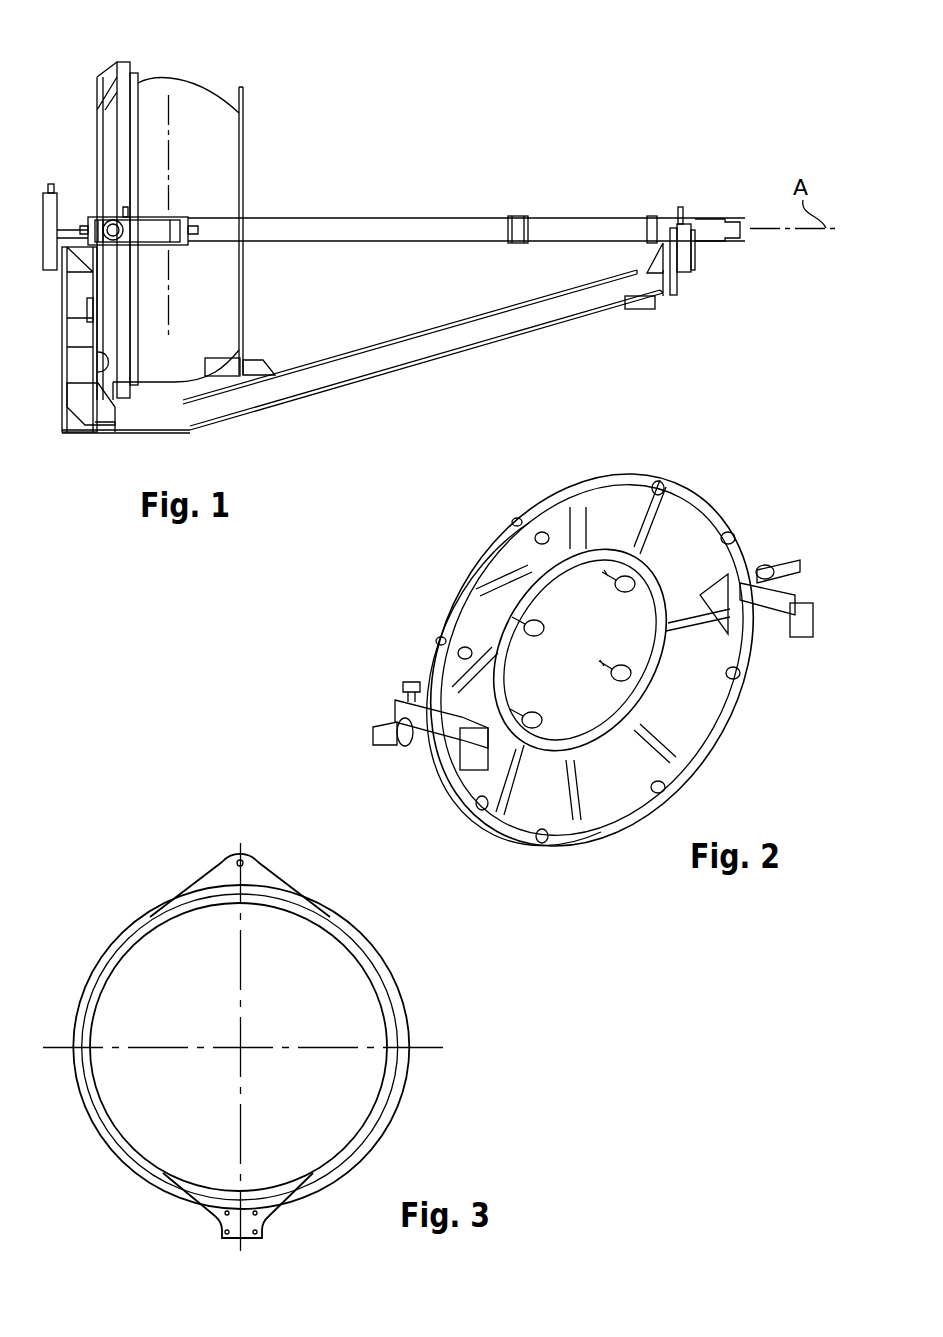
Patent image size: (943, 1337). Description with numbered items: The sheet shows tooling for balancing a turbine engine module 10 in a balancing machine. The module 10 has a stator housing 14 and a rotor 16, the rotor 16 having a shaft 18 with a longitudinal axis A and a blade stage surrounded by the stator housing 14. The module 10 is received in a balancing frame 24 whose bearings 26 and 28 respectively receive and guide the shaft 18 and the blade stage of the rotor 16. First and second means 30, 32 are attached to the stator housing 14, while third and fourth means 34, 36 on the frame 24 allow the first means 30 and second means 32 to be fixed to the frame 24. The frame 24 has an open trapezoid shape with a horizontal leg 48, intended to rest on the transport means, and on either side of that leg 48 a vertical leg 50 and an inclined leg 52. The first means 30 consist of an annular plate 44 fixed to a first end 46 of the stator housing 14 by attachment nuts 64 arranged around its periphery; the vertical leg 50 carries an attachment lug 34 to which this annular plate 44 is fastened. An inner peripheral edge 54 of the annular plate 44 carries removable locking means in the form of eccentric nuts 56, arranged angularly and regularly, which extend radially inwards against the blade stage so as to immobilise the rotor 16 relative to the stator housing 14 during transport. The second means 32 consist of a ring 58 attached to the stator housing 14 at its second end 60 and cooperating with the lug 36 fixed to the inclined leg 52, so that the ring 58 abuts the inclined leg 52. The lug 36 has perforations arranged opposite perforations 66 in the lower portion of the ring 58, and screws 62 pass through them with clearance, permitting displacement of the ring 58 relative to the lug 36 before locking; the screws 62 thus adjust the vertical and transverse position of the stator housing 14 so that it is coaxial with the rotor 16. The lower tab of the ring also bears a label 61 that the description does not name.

In FIG. 1, the turbine engine module 10 is at (382, 190).
In FIG. 1, the stator housing 14 is at (197, 80).
In FIG. 1, the rotor 16 is at (463, 213).
In FIG. 1, the shaft 18 is at (560, 218).
In FIG. 1, the balancing frame 24 is at (512, 322).
In FIG. 1, the bearing 26 is at (693, 190).
In FIG. 1, the bearing 28 is at (73, 190).
In FIG. 1, the first means 30 is at (127, 58).
In FIG. 2, the first means 30 is at (742, 495).
In FIG. 1, the second means 32 is at (245, 100).
In FIG. 3, the second means 32 is at (322, 862).
In FIG. 1, the attachment lug 34 is at (90, 302).
In FIG. 1, the lug 36 is at (260, 365).
In FIG. 1, the annular plate 44 is at (122, 82).
In FIG. 2, the annular plate 44 is at (655, 762).
In FIG. 1, the first end 46 is at (140, 97).
In FIG. 1, the horizontal leg 48 is at (150, 418).
In FIG. 1, the vertical leg 50 is at (78, 353).
In FIG. 1, the inclined leg 52 is at (450, 345).
In FIG. 2, the inner peripheral edge 54 is at (592, 580).
In FIG. 2, the eccentric nuts 56 is at (602, 700).
In FIG. 1, the ring 58 is at (245, 155).
In FIG. 3, the ring 58 is at (206, 876).
In FIG. 1, the second end 60 is at (210, 115).
In FIG. 1, the bottom lug 61 is at (228, 365).
In FIG. 3, the bottom lug 61 is at (222, 1222).
In FIG. 1, the screws 62 is at (245, 355).
In FIG. 2, the attachment nuts 64 is at (446, 622).
In FIG. 3, the perforations 66 is at (256, 1233).